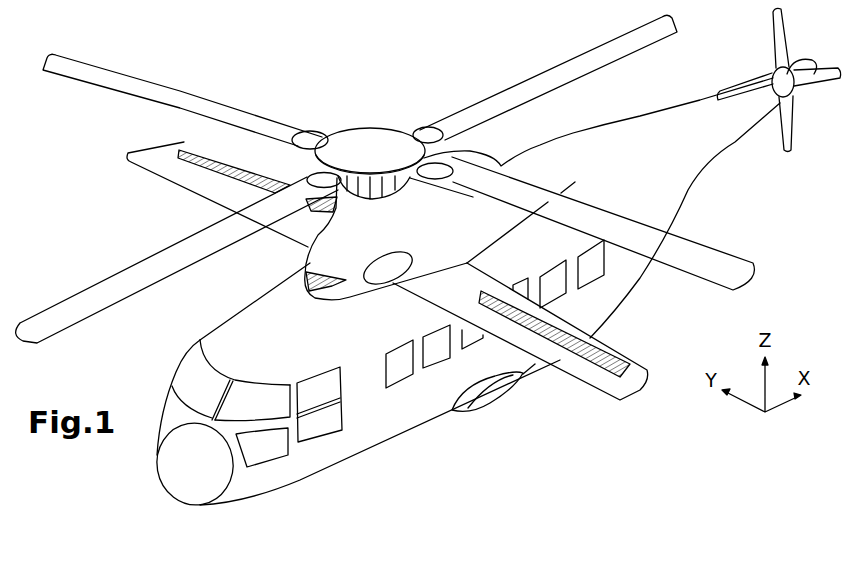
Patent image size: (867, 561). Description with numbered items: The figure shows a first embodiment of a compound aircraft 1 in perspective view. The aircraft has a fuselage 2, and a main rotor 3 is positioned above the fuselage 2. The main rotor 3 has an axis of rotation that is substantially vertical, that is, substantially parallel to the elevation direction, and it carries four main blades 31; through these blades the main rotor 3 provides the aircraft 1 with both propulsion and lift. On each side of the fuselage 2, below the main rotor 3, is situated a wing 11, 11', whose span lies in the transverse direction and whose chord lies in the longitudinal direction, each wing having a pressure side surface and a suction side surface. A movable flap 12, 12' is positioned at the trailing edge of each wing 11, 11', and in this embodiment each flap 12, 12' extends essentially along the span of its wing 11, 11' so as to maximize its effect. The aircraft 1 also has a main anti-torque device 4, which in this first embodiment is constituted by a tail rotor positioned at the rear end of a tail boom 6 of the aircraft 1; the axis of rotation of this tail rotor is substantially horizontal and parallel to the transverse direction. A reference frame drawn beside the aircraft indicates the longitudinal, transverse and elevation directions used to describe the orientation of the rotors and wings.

The compound aircraft 1 is at (443, 468).
The fuselage 2 is at (343, 463).
The main rotor 3 is at (331, 116).
The main anti-torque device 4 is at (775, 79).
The tail boom 6 is at (723, 124).
The wing 11 is at (185, 189).
The wing 11' is at (520, 359).
The flap 12 is at (257, 125).
The flap 12' is at (573, 334).
The main blade 31 is at (108, 290).